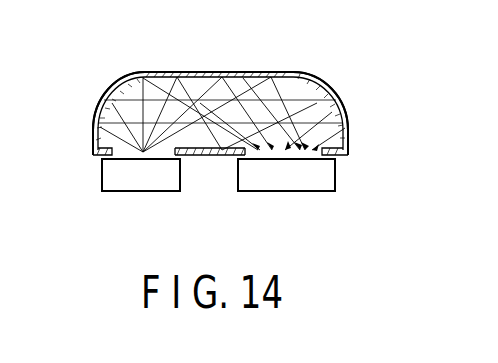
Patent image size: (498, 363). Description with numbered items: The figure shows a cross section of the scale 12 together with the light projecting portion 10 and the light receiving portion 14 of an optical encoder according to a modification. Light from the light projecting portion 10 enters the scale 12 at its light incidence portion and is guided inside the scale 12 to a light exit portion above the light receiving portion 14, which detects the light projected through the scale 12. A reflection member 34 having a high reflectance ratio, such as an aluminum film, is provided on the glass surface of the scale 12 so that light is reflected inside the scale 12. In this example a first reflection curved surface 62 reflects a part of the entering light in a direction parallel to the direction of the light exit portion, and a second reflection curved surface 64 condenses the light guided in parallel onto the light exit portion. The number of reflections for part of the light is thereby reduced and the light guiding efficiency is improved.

The light projecting portion 10 is at (140, 180).
The scale 12 is at (275, 93).
The light receiving portion 14 is at (293, 180).
The reflection member 34 is at (210, 72).
The first reflection curved surface 62 is at (118, 93).
The second reflection curved surface 64 is at (338, 97).